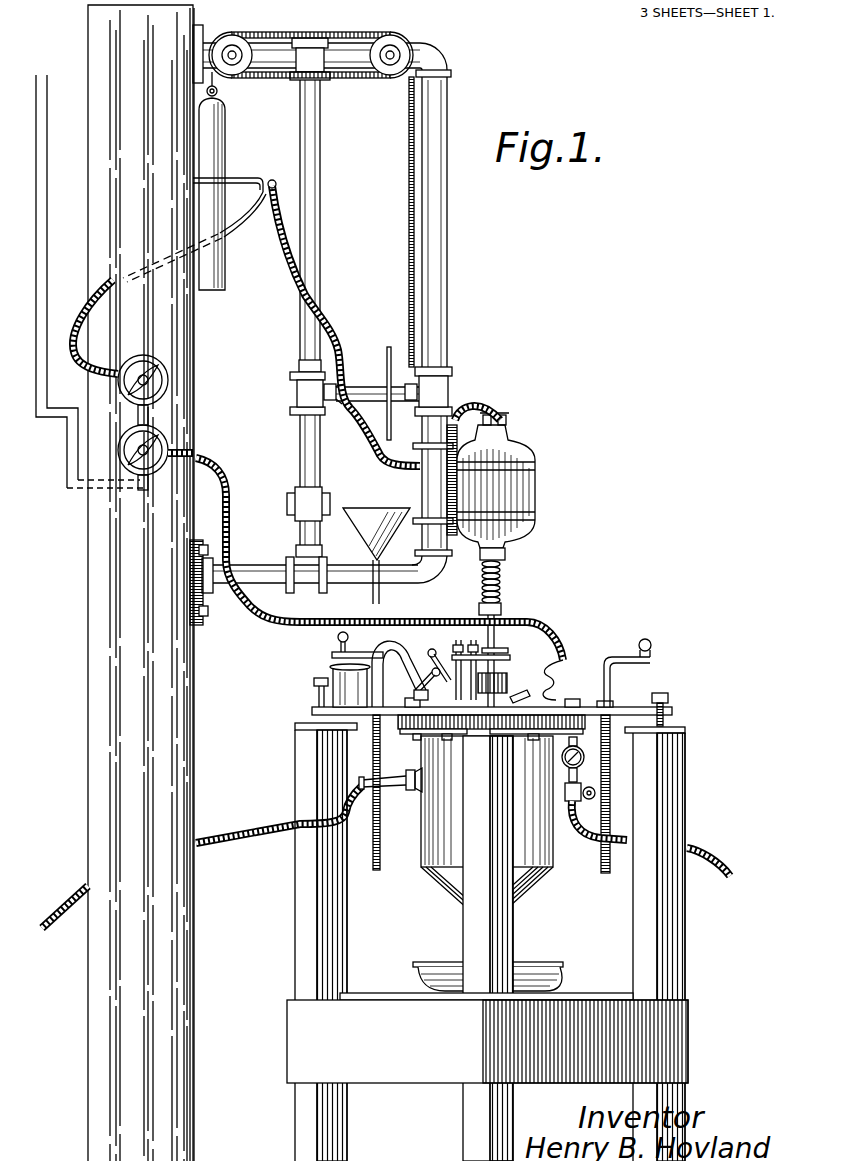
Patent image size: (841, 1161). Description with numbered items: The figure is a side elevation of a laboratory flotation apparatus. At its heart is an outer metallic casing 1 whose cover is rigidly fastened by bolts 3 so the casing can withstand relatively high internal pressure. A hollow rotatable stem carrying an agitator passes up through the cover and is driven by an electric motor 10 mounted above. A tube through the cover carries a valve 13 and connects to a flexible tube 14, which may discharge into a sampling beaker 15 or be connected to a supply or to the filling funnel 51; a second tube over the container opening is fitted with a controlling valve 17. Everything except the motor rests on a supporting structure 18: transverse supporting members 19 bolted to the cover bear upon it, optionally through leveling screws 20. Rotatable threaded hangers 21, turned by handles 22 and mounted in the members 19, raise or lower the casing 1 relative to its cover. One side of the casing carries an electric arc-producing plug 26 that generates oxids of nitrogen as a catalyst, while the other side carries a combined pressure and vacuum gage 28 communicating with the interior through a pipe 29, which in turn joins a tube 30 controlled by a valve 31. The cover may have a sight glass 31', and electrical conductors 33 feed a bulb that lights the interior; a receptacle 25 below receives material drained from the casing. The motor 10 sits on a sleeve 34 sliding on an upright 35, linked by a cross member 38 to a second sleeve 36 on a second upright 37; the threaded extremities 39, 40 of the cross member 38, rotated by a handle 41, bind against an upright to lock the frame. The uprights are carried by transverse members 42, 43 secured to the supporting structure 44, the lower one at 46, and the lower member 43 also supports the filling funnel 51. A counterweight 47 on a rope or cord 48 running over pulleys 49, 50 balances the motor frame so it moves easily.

The outer metallic casing 1 is at (441, 850).
The bolts 3 is at (550, 708).
The electric motor 10 is at (520, 450).
The valve 13 is at (415, 690).
The flexible tube 14 is at (384, 662).
The sampling beaker 15 is at (343, 684).
The controlling valve 17 is at (469, 663).
The supporting structure 18 is at (318, 753).
The transverse supporting members 19 is at (672, 711).
The leveling screws 20 is at (668, 697).
The rotatable threaded hangers 21 is at (378, 872).
The handles 22 is at (352, 622).
The receptacle 25 is at (532, 965).
The electric arc-producing plug 26 is at (411, 788).
The combined pressure and vacuum gage 28 is at (585, 757).
The pipe 29 is at (578, 812).
The tube 30 is at (705, 858).
The valve 31 is at (601, 804).
The sight glass 31' is at (531, 678).
The electrical conductors 33 is at (566, 662).
The sleeve 34 is at (447, 362).
The upright 35 is at (447, 258).
The second sleeve 36 is at (298, 366).
The second upright 37 is at (314, 207).
The cross member 38 is at (370, 408).
The threaded extremity 39 is at (300, 394).
The threaded extremity 40 is at (450, 390).
The handle 41 is at (388, 350).
The transverse member 42 is at (350, 74).
The lower transverse member 43 is at (193, 48).
The supporting structure 44 is at (141, 583).
The securing point 46 is at (196, 615).
The counterweight 47 is at (224, 128).
The rope or cord 48 is at (410, 182).
The pulley 49 is at (390, 78).
The pulley 50 is at (230, 42).
The filling funnel 51 is at (380, 512).